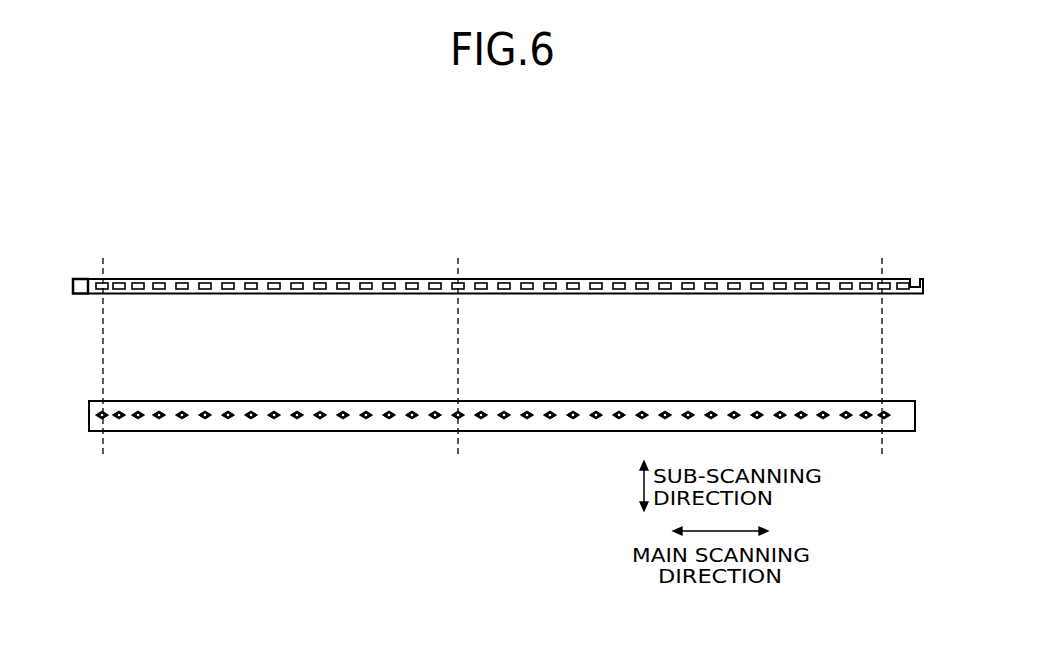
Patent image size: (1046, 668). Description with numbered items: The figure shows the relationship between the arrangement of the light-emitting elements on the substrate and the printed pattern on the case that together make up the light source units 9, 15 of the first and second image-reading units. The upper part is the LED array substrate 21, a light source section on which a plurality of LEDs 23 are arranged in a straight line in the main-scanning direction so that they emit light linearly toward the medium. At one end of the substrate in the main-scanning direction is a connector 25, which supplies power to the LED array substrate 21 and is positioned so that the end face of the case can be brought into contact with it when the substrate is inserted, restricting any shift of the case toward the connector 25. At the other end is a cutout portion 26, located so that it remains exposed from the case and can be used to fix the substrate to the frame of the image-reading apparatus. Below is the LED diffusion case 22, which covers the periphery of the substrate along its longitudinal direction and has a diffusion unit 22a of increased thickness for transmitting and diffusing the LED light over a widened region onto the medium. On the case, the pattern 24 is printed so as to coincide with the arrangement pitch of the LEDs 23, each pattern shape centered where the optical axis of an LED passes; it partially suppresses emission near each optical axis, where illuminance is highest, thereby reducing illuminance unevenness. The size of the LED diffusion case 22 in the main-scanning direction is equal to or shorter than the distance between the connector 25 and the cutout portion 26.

The light source unit 9 is at (498, 322).
The light source unit 15 is at (186, 187).
The LED array substrate 21 is at (252, 273).
The LED diffusion case 22 is at (292, 440).
The diffusion unit 22a is at (560, 432).
The LEDs 23 is at (345, 282).
The pattern 24 is at (391, 420).
The connector 25 is at (83, 281).
The cutout portion 26 is at (914, 281).